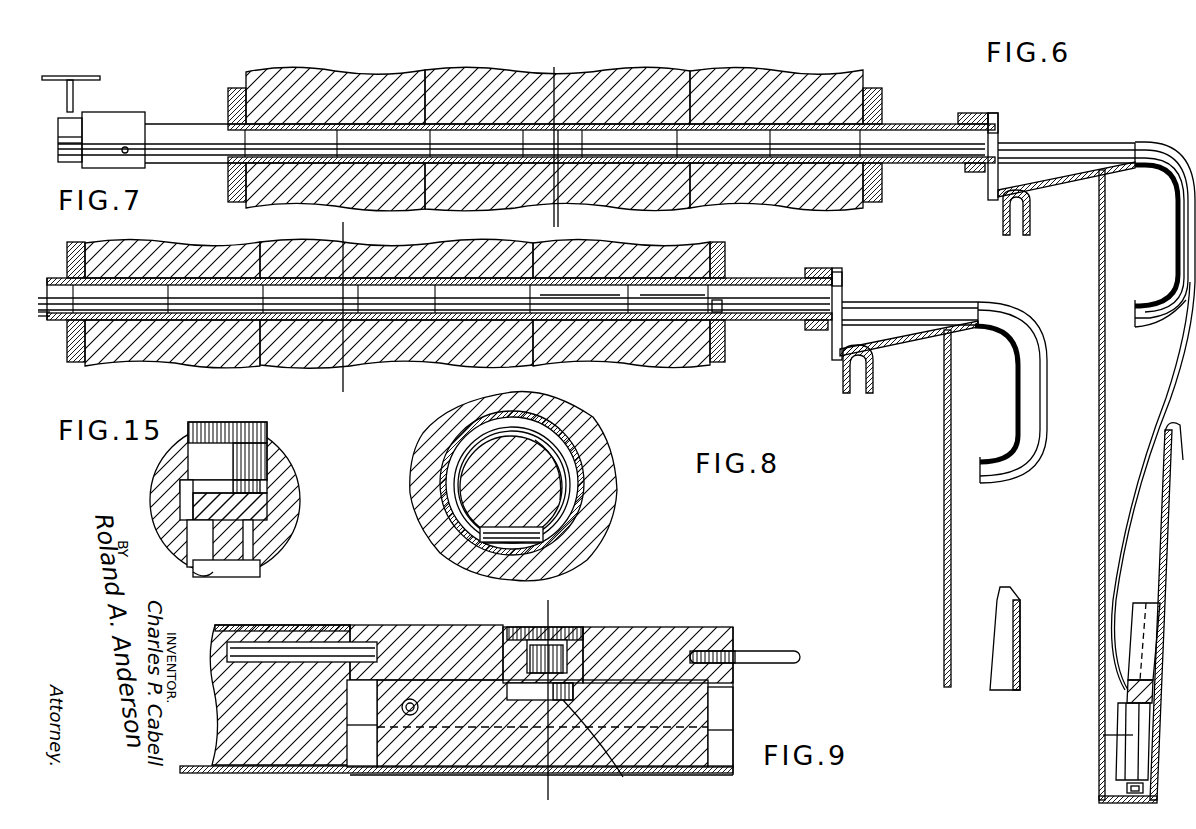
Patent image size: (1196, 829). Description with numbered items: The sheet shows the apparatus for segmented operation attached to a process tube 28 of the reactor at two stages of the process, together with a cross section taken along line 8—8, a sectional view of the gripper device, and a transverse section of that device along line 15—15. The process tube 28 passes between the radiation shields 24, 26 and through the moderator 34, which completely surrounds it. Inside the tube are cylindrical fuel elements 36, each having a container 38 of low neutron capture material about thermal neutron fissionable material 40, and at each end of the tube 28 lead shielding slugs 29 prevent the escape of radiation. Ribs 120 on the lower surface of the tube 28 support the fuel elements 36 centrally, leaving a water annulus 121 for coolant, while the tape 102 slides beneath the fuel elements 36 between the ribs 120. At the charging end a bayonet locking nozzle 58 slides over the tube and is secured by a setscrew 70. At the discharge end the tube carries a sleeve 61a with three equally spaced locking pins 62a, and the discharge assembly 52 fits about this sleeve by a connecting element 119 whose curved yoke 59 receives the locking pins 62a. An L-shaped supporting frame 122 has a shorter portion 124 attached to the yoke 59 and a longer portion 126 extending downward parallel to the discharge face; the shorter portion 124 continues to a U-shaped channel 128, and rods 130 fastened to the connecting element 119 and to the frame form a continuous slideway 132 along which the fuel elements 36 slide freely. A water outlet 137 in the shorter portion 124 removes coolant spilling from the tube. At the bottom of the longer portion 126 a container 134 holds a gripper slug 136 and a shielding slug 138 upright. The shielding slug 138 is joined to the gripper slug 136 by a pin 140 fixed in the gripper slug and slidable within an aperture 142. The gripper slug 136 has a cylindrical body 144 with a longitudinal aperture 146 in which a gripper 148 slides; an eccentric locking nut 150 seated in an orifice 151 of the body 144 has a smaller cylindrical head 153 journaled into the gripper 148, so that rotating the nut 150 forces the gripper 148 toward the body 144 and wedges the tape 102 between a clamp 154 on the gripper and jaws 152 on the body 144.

In FIG. 7, the line 8— 8 is at (353, 309).
In FIG. 9, the line 15— 15 is at (560, 701).
In FIG. 6, the radiation shield 24 is at (326, 122).
In FIG. 7, the radiation shield 24 is at (163, 320).
In FIG. 6, the radiation shield 26 is at (786, 127).
In FIG. 7, the radiation shield 26 is at (629, 320).
In FIG. 6, the process tube 28 is at (570, 144).
In FIG. 7, the process tube 28 is at (439, 272).
In FIG. 8, the process tube 28 is at (534, 476).
In FIG. 6, the shielding slug 29 is at (521, 98).
In FIG. 7, the shielding slug 29 is at (434, 268).
In FIG. 8, the moderator 34 is at (537, 486).
In FIG. 6, the fuel element 36 is at (557, 134).
In FIG. 7, the fuel element 36 is at (396, 296).
In FIG. 8, the fuel element 36 is at (465, 482).
In FIG. 8, the container 38 is at (463, 485).
In FIG. 8, the thermal neutron fissionable material 40 is at (557, 487).
In FIG. 6, the discharge assembly 52 is at (1079, 485).
In FIG. 6, the bayonet locking nozzle 58 is at (107, 121).
In FIG. 6, the curved yoke 59 is at (1013, 152).
In FIG. 7, the curved yoke 59 is at (859, 308).
In FIG. 6, the sleeve 61a is at (941, 123).
In FIG. 7, the sleeve 61a is at (801, 342).
In FIG. 6, the locking pin 62a is at (961, 92).
In FIG. 7, the locking pin 62a is at (805, 255).
In FIG. 6, the setscrew 70 is at (73, 75).
In FIG. 6, the tape 102 is at (1154, 486).
In FIG. 7, the tape 102 is at (57, 355).
In FIG. 15, the tape 102 is at (259, 543).
In FIG. 8, the tape 102 is at (457, 558).
In FIG. 9, the tape 102 is at (456, 787).
In FIG. 6, the connecting element 119 is at (1006, 107).
In FIG. 7, the connecting element 119 is at (853, 265).
In FIG. 8, the rib 120 is at (508, 543).
In FIG. 8, the water annulus 121 is at (605, 470).
In FIG. 6, the supporting frame 122 is at (1104, 542).
In FIG. 6, the shorter portion 124 is at (1066, 193).
In FIG. 7, the shorter portion 124 is at (909, 355).
In FIG. 6, the longer portion 126 is at (1116, 611).
In FIG. 7, the longer portion 126 is at (952, 510).
In FIG. 6, the U-shaped channel 128 is at (1150, 235).
In FIG. 6, the rod 130 is at (1066, 132).
In FIG. 7, the rod 130 is at (910, 299).
In FIG. 6, the slideway 132 is at (1165, 213).
In FIG. 7, the slideway 132 is at (1011, 392).
In FIG. 6, the container 134 is at (1082, 726).
In FIG. 6, the gripper slug 136 is at (1091, 741).
In FIG. 7, the gripper slug 136 is at (683, 262).
In FIG. 15, the gripper slug 136 is at (200, 500).
In FIG. 9, the gripper slug 136 is at (658, 638).
In FIG. 6, the water outlet 137 is at (1009, 222).
In FIG. 7, the water outlet 137 is at (863, 387).
In FIG. 6, the shielding slug 138 is at (1106, 641).
In FIG. 7, the shielding slug 138 is at (580, 262).
In FIG. 9, the shielding slug 138 is at (282, 609).
In FIG. 6, the pin 140 is at (1100, 692).
In FIG. 9, the pin 140 is at (302, 626).
In FIG. 9, the aperture 142 is at (260, 677).
In FIG. 15, the cylindrical body 144 is at (269, 506).
In FIG. 9, the cylindrical body 144 is at (743, 628).
In FIG. 15, the longitudinal aperture 146 is at (146, 500).
In FIG. 9, the longitudinal aperture 146 is at (752, 724).
In FIG. 15, the gripper 148 is at (294, 539).
In FIG. 9, the gripper 148 is at (527, 717).
In FIG. 15, the eccentric locking nut 150 is at (183, 451).
In FIG. 9, the eccentric locking nut 150 is at (536, 640).
In FIG. 15, the orifice 151 is at (289, 461).
In FIG. 9, the orifice 151 is at (496, 635).
In FIG. 6, the jaw 152 is at (1086, 779).
In FIG. 15, the jaw 152 is at (262, 571).
In FIG. 9, the jaw 152 is at (552, 718).
In FIG. 15, the cylindrical head 153 is at (263, 483).
In FIG. 9, the cylindrical head 153 is at (589, 746).
In FIG. 15, the clamp 154 is at (176, 573).